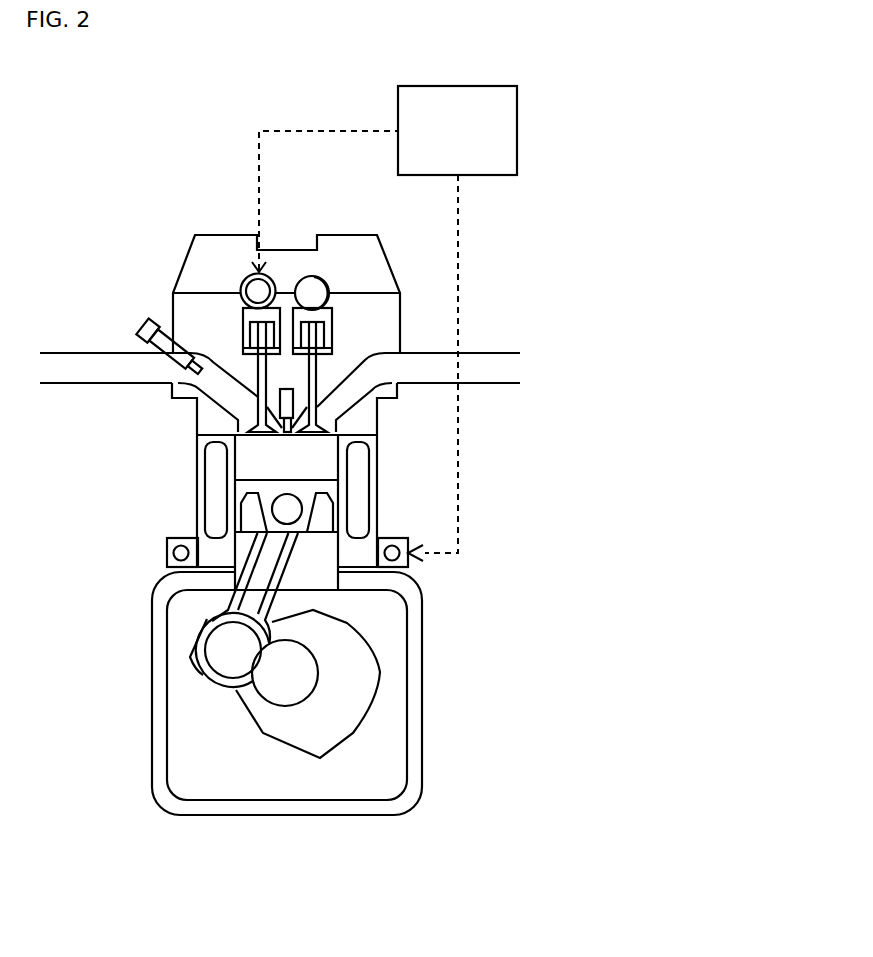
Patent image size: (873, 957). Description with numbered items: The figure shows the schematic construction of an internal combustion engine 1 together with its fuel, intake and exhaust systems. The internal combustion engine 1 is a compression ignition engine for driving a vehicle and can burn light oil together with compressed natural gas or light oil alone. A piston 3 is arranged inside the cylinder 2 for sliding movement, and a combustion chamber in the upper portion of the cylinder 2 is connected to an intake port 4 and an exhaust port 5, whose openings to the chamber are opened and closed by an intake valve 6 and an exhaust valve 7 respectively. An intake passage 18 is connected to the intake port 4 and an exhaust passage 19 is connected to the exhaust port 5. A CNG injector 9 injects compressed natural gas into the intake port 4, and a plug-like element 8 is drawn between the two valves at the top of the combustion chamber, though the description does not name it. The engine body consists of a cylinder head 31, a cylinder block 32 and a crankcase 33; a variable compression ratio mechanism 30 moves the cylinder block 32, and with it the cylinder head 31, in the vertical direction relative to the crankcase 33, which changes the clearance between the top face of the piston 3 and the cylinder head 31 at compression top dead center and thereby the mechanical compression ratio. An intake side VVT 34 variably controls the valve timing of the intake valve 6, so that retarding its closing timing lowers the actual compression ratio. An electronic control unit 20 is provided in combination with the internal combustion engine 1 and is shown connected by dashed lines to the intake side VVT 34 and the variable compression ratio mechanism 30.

The internal combustion engine 1 is at (99, 794).
The cylinder 2 is at (228, 462).
The piston 3 is at (333, 490).
The intake port 4 is at (207, 397).
The exhaust port 5 is at (378, 400).
The intake valve 6 is at (247, 363).
The exhaust valve 7 is at (317, 363).
The spark plug 8 is at (290, 436).
The CNG injector 9 is at (143, 323).
The intake passage 18 is at (71, 384).
The exhaust passage 19 is at (481, 352).
The electronic control unit (ECU) 20 is at (517, 131).
The variable compression ratio mechanism 30 is at (164, 549).
The cylinder head 31 is at (170, 307).
The cylinder block 32 is at (196, 505).
The crankcase 33 is at (152, 693).
The intake side variable valve drive mechanism (intake side VVT) 34 is at (248, 278).